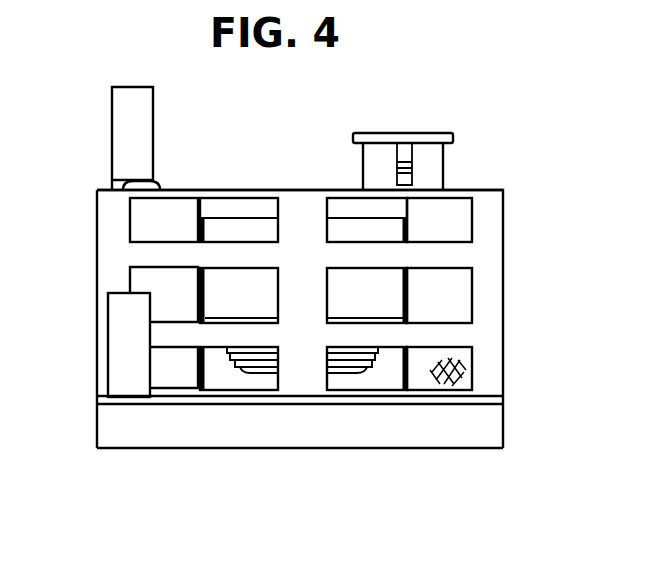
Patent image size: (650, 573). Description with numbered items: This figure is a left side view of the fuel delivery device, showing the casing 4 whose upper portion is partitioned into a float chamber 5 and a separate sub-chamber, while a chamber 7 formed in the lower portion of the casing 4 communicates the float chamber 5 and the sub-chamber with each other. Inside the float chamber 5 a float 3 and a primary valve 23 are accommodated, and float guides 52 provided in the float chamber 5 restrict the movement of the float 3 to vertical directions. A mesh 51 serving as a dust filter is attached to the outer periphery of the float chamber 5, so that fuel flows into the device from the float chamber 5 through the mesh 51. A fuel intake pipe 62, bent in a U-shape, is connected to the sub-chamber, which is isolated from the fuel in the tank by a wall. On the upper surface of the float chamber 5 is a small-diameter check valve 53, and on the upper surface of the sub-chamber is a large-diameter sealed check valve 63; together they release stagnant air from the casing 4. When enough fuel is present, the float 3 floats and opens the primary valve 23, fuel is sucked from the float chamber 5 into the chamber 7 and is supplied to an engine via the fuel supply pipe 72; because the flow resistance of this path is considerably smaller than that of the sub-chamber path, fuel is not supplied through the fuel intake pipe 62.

The float 3 is at (245, 225).
The casing 4 is at (302, 195).
The float chamber 5 is at (488, 258).
The chamber 7 is at (105, 427).
The primary valve 23 is at (252, 363).
The mesh 51 is at (462, 375).
The float guides 52 is at (415, 290).
The check valve 53 is at (123, 183).
The fuel intake pipe 62 is at (122, 113).
The check valve 63 is at (427, 163).
The fuel supply pipe 72 is at (122, 352).